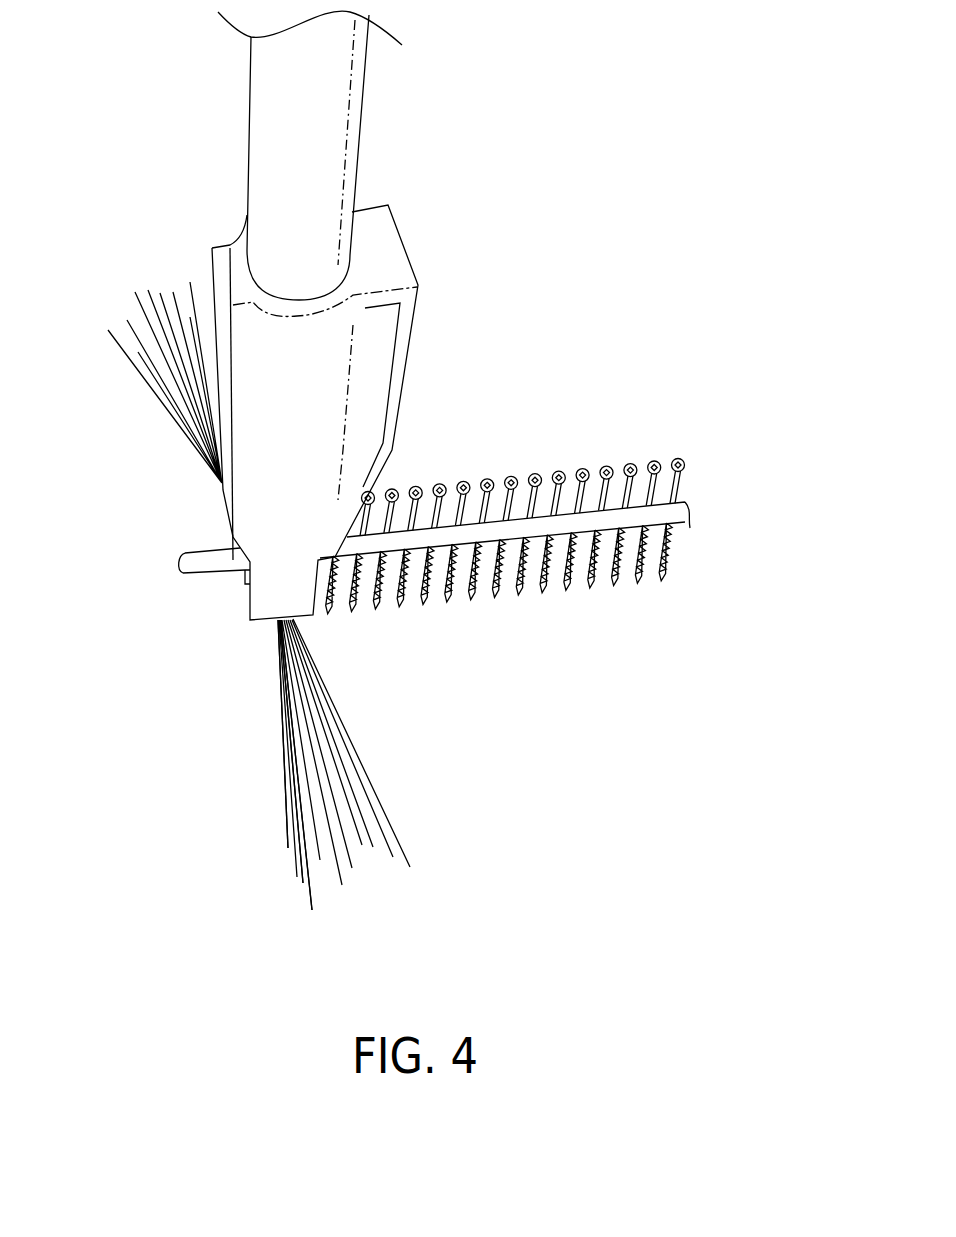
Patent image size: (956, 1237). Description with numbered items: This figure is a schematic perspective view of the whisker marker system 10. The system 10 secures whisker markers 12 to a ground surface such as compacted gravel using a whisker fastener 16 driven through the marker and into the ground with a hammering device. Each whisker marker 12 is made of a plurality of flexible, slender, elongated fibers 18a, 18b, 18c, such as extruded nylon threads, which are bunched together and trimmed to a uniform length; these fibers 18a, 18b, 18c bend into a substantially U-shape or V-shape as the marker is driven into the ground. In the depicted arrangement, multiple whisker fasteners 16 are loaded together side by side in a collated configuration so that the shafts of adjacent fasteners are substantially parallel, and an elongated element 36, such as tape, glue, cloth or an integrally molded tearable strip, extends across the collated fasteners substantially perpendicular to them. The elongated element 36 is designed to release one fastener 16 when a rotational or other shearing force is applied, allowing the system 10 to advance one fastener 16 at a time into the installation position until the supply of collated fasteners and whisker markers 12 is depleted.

The whisker marker system 10 is at (483, 140).
The whisker marker 12 is at (355, 747).
The whisker fastener 16 is at (670, 557).
The extruded fiber 18a is at (287, 848).
The extruded fiber 18b is at (303, 883).
The extruded fiber 18c is at (312, 902).
The elongated element 36 is at (180, 568).